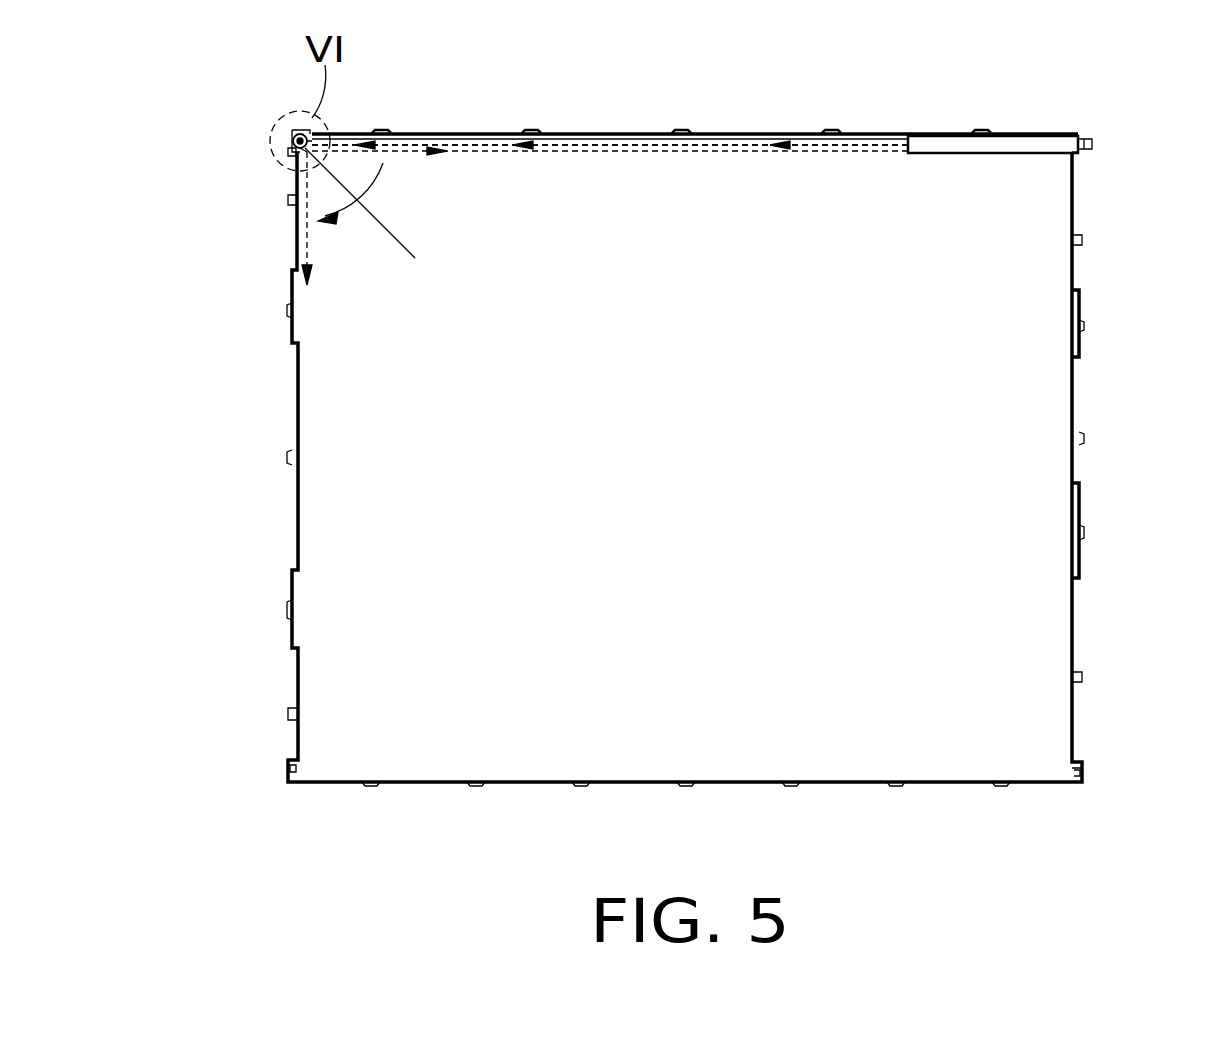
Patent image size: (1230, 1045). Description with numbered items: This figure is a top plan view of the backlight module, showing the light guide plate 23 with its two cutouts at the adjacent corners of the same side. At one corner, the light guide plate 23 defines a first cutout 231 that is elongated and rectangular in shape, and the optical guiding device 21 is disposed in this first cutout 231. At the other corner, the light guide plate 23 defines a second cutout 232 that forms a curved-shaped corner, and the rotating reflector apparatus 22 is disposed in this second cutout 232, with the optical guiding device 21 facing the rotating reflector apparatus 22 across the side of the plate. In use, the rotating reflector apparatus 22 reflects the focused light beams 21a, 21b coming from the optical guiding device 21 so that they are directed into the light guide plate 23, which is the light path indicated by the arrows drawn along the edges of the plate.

The optical guiding device 21 is at (1018, 145).
The focused light beam 21a is at (598, 148).
The focused light beam 21b is at (302, 225).
The rotating reflector apparatus 22 is at (292, 140).
The light guide plate 23 is at (972, 302).
The first cutout 231 is at (1040, 155).
The second cutout 232 is at (295, 150).